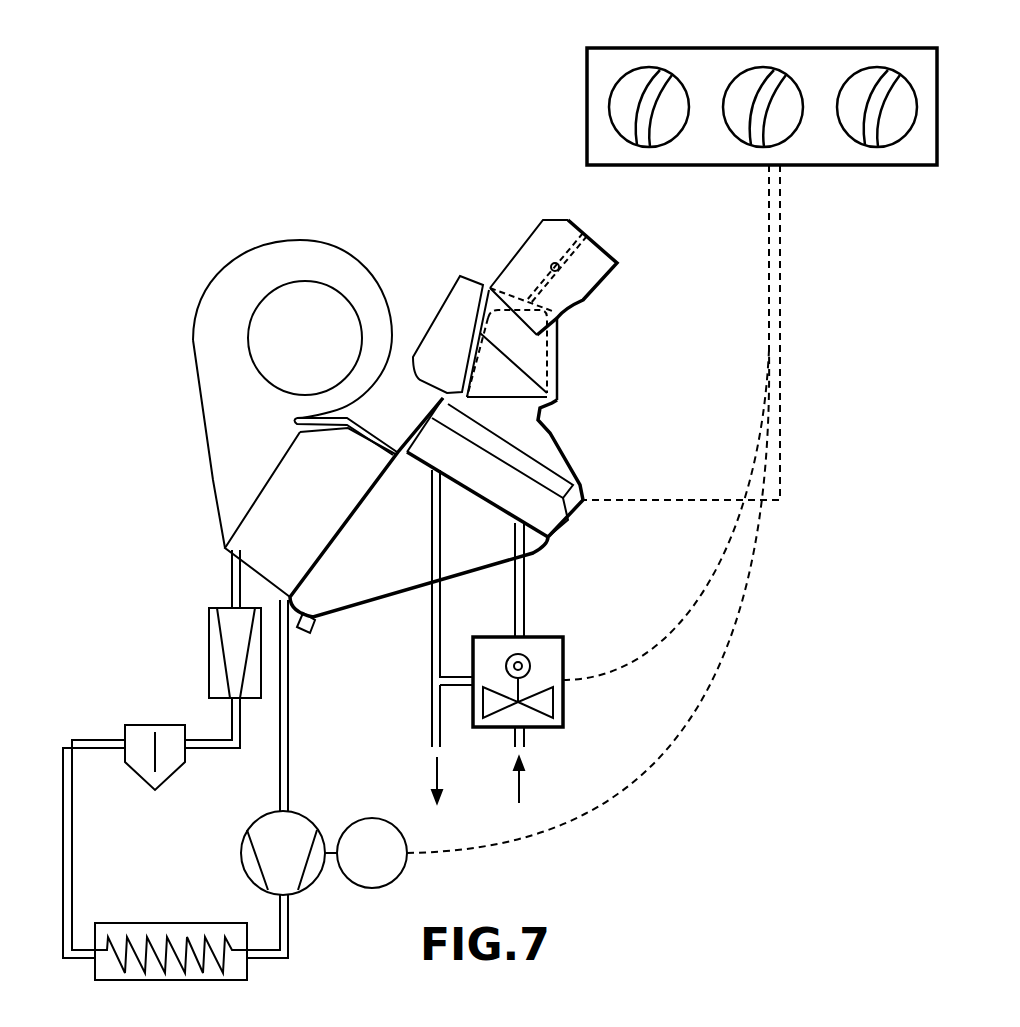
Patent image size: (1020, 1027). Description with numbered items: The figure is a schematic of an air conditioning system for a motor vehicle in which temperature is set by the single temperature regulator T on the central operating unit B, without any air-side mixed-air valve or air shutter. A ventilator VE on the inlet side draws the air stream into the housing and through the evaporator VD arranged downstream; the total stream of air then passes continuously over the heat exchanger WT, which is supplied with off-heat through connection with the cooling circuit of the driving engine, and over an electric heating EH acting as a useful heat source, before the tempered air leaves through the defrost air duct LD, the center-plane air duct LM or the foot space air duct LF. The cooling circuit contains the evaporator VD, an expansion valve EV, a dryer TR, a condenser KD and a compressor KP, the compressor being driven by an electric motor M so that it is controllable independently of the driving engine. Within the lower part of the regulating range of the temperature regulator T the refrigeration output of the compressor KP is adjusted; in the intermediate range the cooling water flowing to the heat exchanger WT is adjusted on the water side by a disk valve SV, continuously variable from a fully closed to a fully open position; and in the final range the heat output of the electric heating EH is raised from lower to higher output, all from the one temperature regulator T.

The central operating unit B is at (868, 47).
The temperature regulator T is at (773, 78).
The ventilator VE is at (203, 362).
The evaporator VD is at (253, 513).
The defrost air duct LD is at (460, 288).
The center-plane air duct LM is at (550, 225).
The foot space air duct LF is at (540, 373).
The electric heating EH is at (545, 472).
The heat exchanger WT is at (554, 517).
The disk valve SV is at (553, 700).
The expansion valve EV is at (214, 647).
The dryer TR is at (173, 722).
The compressor KP is at (245, 838).
The electric motor M is at (378, 886).
The condenser KD is at (162, 922).